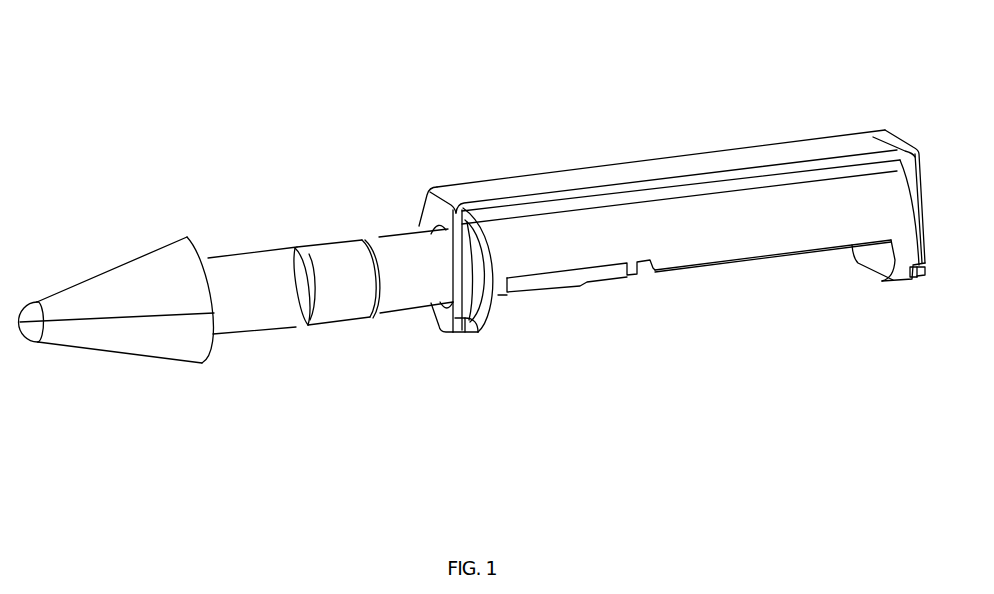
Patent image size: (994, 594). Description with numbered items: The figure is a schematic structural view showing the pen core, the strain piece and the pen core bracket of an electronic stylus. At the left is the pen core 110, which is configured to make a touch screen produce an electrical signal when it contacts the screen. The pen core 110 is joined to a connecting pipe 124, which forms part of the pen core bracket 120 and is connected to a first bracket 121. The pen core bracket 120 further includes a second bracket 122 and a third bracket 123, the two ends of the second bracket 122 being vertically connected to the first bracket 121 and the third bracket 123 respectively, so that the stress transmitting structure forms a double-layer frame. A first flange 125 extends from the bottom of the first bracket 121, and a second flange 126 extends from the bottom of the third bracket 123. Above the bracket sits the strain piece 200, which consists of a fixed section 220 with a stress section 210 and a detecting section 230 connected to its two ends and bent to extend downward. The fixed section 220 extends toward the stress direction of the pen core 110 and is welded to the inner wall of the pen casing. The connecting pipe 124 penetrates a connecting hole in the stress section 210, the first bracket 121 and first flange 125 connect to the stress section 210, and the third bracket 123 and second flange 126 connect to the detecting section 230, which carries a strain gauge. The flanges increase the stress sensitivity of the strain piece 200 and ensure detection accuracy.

The pen core 110 is at (158, 283).
The pen core bracket 120 is at (872, 380).
The first bracket 121 is at (507, 295).
The second bracket 122 is at (660, 243).
The third bracket 123 is at (893, 280).
The connecting pipe 124 is at (392, 288).
The first flange 125 is at (480, 327).
The second flange 126 is at (912, 280).
The strain piece 200 is at (488, 88).
The stress section 210 is at (465, 246).
The fixed section 220 is at (718, 166).
The detecting section 230 is at (903, 176).